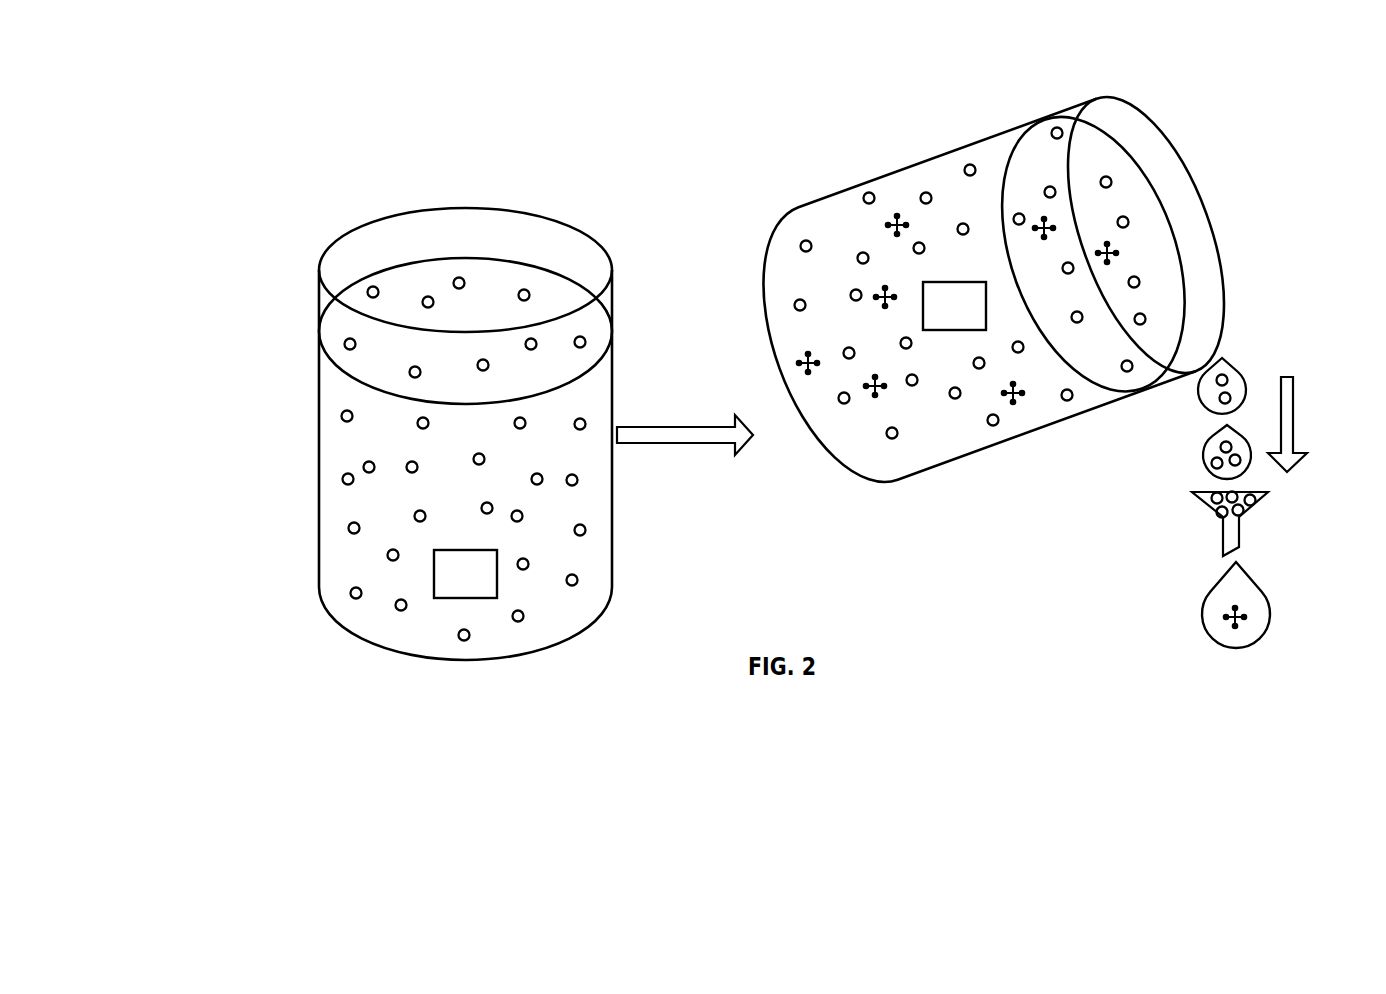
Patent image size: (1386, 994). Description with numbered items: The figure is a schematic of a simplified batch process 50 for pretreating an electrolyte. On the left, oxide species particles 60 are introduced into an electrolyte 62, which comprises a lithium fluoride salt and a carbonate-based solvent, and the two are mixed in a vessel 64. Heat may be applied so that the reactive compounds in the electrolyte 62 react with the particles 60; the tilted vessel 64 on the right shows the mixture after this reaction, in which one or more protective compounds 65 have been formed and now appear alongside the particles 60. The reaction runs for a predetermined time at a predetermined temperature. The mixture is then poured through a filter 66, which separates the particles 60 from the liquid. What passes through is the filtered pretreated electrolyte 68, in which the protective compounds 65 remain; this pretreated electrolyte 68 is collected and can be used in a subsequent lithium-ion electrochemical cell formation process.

The batch process 50 is at (244, 102).
The particles 60 is at (369, 288).
The electrolyte 62 is at (710, 440).
The vessel 64 is at (318, 440).
The protective compounds 65 is at (898, 222).
The filter 66 is at (1239, 536).
The pretreated electrolyte 68 is at (1207, 604).